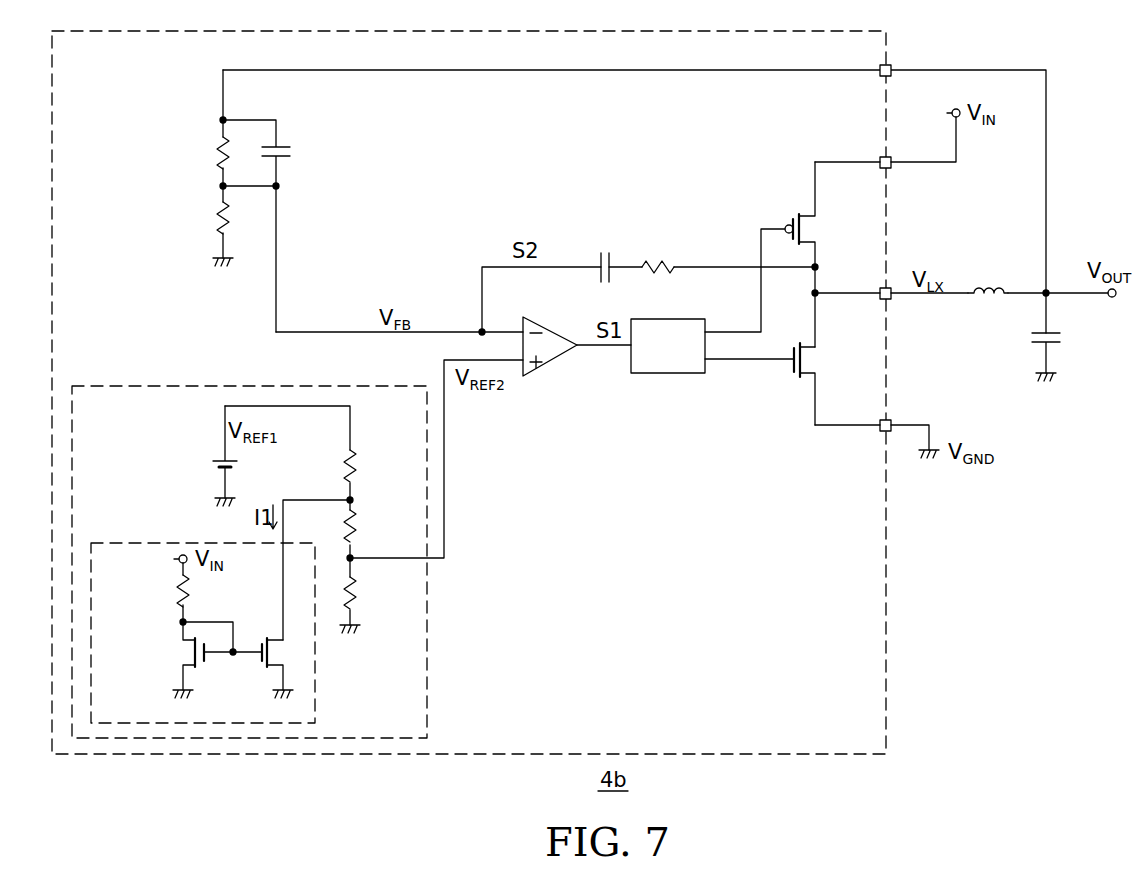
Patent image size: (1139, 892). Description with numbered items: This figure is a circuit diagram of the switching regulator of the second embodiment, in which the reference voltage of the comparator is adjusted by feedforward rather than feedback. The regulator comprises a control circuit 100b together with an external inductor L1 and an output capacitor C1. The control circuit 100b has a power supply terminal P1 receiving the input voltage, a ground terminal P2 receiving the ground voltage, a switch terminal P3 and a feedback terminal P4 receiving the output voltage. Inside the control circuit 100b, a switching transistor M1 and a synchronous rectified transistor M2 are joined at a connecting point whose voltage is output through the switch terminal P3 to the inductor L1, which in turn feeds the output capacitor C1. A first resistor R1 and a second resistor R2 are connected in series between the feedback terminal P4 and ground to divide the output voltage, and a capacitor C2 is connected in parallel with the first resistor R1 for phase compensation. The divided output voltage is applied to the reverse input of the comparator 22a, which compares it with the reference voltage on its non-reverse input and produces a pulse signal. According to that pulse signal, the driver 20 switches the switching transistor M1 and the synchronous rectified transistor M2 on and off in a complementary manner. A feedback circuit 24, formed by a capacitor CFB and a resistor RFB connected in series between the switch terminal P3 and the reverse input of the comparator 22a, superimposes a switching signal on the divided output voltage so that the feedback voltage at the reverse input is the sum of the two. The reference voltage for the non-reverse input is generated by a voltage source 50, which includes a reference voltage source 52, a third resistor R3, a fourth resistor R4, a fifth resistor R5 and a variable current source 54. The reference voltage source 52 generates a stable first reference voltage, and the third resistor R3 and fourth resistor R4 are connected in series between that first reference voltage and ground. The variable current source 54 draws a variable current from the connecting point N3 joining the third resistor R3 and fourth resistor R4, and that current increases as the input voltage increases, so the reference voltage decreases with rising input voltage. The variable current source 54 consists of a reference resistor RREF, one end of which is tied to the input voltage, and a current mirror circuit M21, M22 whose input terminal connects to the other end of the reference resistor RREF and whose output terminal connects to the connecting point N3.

The control circuit 100b is at (886, 690).
The voltage source 50 is at (428, 673).
The reference voltage source 52 is at (162, 463).
The variable current source 54 is at (316, 689).
The driver 20 is at (680, 374).
The comparator 22a is at (556, 371).
The feedback circuit 24 is at (633, 225).
The first resistor R1 is at (218, 163).
The second resistor R2 is at (218, 231).
The capacitor C2 is at (292, 151).
The capacitor CFB is at (604, 252).
The resistor RFB is at (660, 239).
The switching transistor M1 is at (820, 229).
The synchronous rectified transistor M2 is at (820, 361).
The power supply terminal P1 is at (891, 159).
The ground terminal P2 is at (891, 422).
The switch terminal P3 is at (891, 299).
The feedback terminal P4 is at (891, 67).
The inductor L1 is at (990, 277).
The output capacitor C1 is at (1062, 339).
The third resistor R3 is at (358, 459).
The fourth resistor R4 is at (358, 531).
The fifth resistor R5 is at (358, 591).
The connecting point N3 is at (367, 501).
The reference resistor RREF is at (175, 599).
The current mirror circuit transistor M21 is at (200, 672).
The current mirror circuit transistor M22 is at (265, 635).